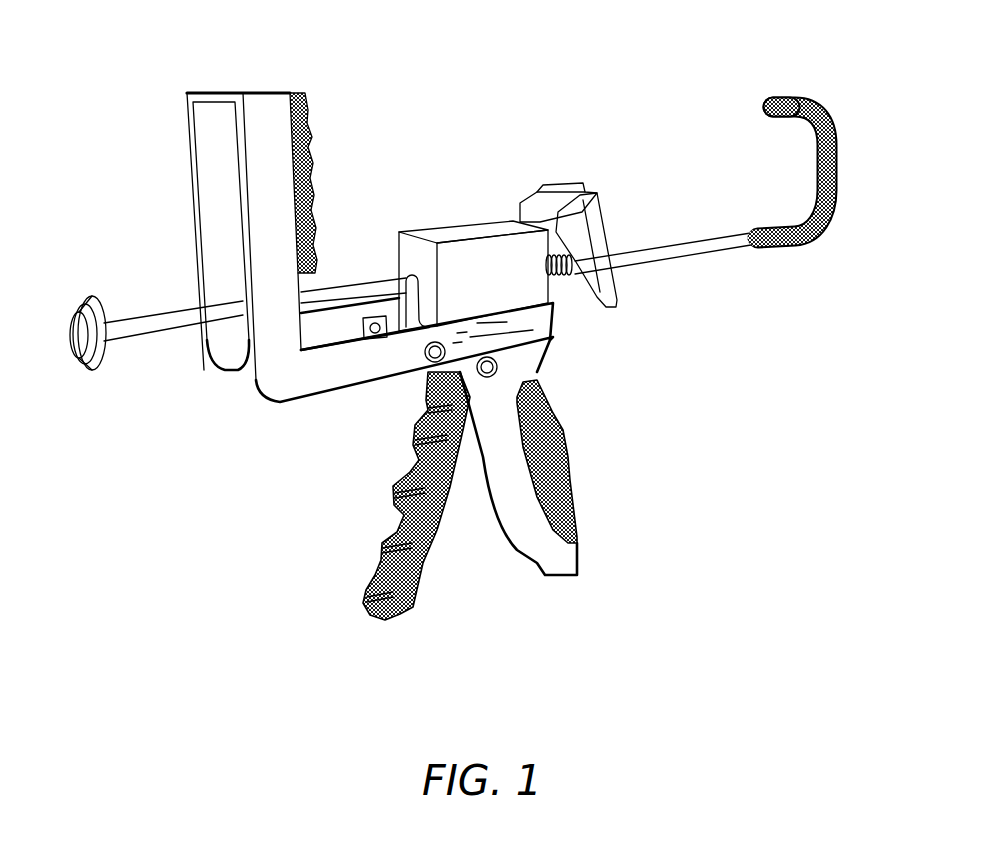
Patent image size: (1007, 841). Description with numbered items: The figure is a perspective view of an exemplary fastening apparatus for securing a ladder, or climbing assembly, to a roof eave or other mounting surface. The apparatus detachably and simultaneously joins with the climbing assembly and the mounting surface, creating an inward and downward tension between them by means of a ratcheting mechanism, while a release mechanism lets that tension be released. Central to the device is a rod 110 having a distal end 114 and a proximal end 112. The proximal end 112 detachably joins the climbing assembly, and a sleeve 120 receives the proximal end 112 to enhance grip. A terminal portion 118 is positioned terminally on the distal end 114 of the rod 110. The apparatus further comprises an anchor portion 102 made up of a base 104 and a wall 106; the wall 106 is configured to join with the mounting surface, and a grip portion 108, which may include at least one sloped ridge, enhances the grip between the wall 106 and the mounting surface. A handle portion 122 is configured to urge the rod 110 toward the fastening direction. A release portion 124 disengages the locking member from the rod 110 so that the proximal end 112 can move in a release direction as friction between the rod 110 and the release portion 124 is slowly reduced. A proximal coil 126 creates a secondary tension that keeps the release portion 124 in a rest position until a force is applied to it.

The anchor portion 102 is at (246, 434).
The base 104 is at (315, 405).
The wall 106 is at (203, 164).
The grip portion 108 is at (310, 110).
The rod 110 is at (672, 250).
The proximal end 112 is at (828, 256).
The distal end 114 is at (119, 289).
The terminal portion 118 is at (92, 372).
The sleeve 120 is at (790, 97).
The handle portion 122 is at (430, 626).
The release portion 124 is at (614, 308).
The proximal coil 126 is at (568, 278).